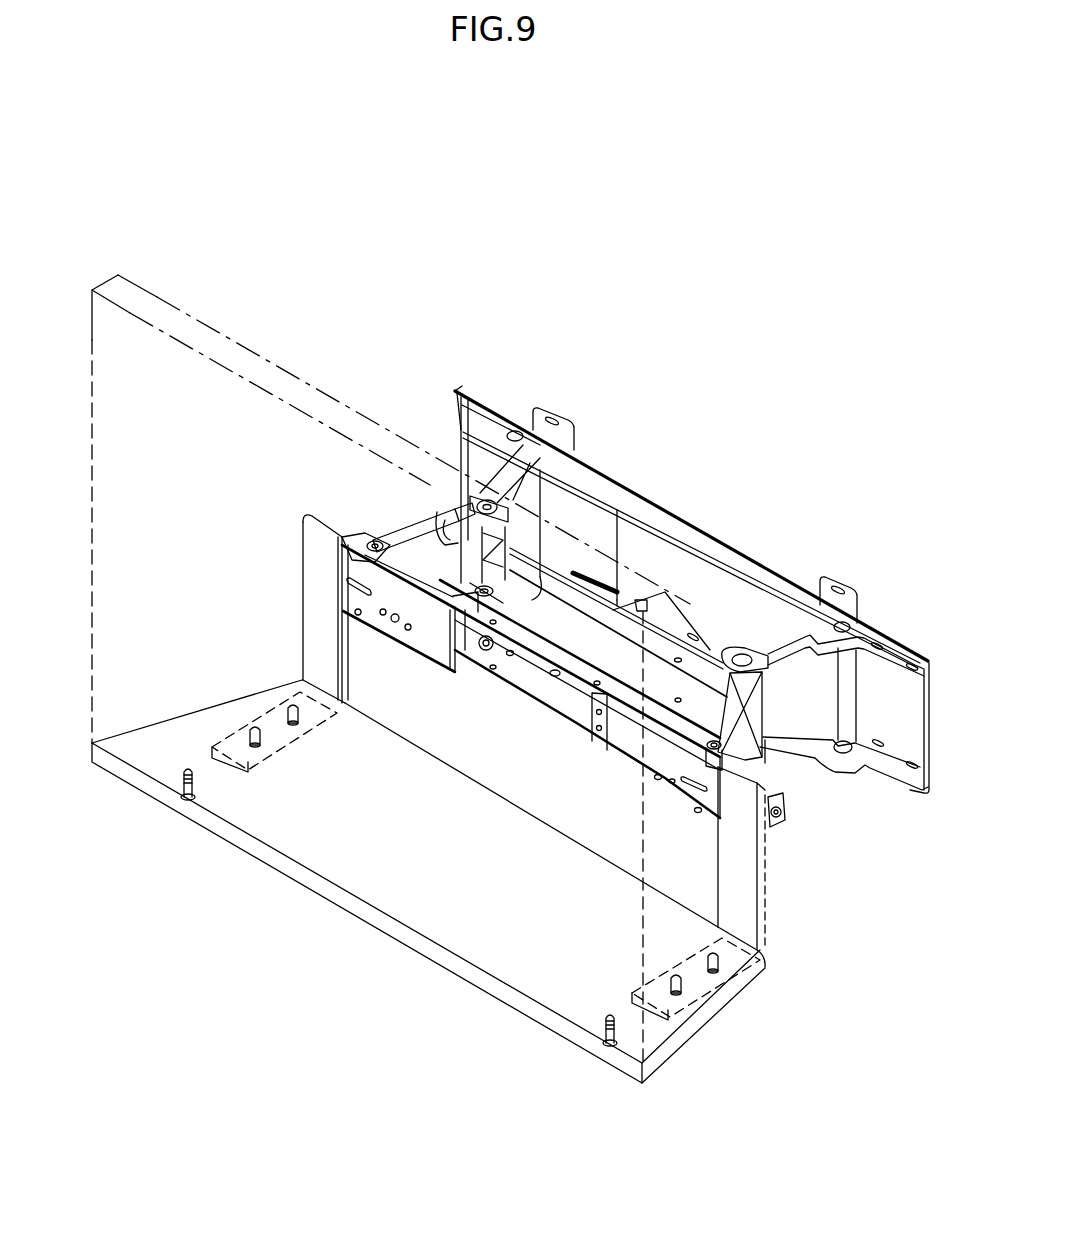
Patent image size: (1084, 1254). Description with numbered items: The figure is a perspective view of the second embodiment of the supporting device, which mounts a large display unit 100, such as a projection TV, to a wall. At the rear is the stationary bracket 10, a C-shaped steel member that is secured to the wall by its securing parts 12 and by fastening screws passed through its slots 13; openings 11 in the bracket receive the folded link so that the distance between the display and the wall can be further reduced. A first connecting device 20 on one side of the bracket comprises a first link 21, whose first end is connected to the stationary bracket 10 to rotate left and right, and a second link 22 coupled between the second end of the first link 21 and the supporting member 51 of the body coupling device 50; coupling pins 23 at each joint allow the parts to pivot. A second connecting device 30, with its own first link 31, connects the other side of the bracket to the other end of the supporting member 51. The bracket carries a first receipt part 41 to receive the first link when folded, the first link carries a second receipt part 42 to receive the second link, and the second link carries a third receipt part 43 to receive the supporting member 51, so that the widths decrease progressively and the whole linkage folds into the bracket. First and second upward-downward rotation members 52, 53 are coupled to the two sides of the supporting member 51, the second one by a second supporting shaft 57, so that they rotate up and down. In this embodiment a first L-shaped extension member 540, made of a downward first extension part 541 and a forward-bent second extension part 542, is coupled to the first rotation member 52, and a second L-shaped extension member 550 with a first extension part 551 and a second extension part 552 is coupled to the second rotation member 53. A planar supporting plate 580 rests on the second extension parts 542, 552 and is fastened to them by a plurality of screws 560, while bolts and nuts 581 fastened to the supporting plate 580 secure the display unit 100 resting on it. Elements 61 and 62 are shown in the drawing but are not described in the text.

The display unit 100 is at (128, 280).
The stationary bracket 10 is at (692, 607).
The openings 11 is at (650, 568).
The securing parts 12 is at (573, 441).
The slots 13 is at (620, 612).
The first connecting device 20 is at (630, 567).
The first link 21 is at (489, 492).
The second link 22 is at (395, 542).
The coupling pins 23 is at (515, 431).
The second connecting device 30 is at (730, 635).
The first link 31 is at (807, 624).
The first receipt part 41 is at (643, 572).
The second receipt part 42 is at (787, 705).
The third receipt part 43 is at (440, 545).
The body coupling device 50 is at (525, 617).
The supporting member 51 is at (538, 640).
The first upward-downward rotation member 52 is at (430, 643).
The second upward-downward rotation member 53 is at (620, 760).
The second supporting shaft 57 is at (782, 812).
The first roller block 61 is at (457, 670).
The second roller block 62 is at (590, 735).
The first L-shaped extension member 540 is at (253, 643).
The first extension part 541 is at (318, 548).
The second extension part 542 is at (266, 718).
The second L-shaped extension member 550 is at (754, 905).
The first extension part 551 is at (740, 840).
The second extension part 552 is at (690, 998).
The screws 560 is at (292, 708).
The supporting plate 580 is at (350, 877).
The bolts and nuts 581 is at (184, 774).